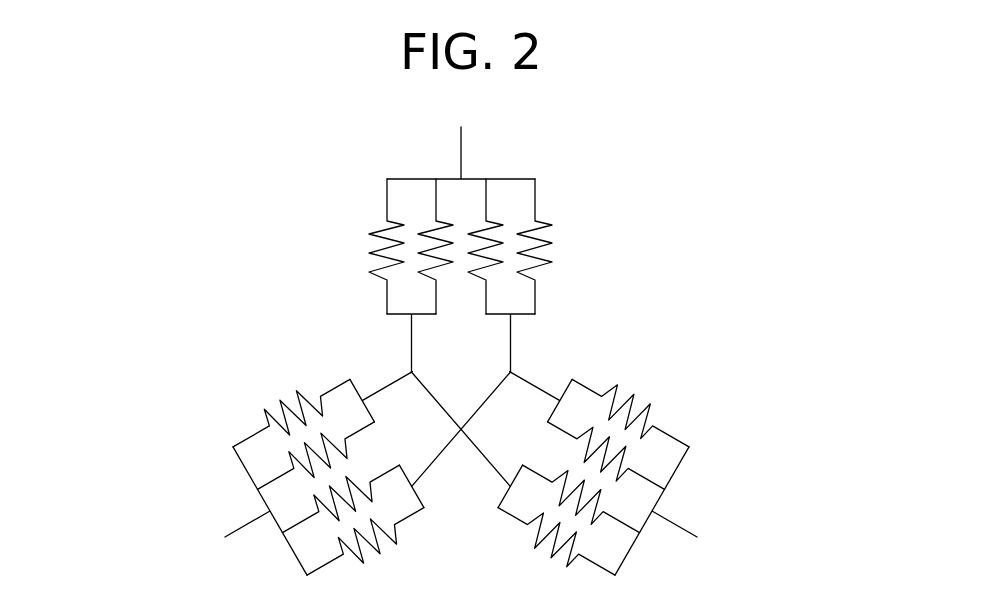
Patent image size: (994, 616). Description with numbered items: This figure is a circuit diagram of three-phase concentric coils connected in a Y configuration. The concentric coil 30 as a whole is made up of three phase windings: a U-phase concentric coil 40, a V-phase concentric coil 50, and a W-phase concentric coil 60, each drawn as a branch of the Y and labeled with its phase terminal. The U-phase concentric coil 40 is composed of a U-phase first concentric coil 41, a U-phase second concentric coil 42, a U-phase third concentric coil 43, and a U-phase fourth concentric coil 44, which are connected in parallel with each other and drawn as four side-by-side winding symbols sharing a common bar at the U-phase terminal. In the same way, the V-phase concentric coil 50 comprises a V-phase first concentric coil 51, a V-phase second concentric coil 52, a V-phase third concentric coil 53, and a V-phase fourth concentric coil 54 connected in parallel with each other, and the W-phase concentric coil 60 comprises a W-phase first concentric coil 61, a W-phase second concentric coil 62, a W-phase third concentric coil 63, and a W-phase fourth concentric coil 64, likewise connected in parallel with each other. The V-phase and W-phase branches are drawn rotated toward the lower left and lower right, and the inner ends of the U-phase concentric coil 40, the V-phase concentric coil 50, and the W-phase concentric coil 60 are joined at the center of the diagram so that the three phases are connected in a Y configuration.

The concentric coil 30 is at (692, 170).
The U-phase concentric coil 40 is at (463, 160).
The U-phase first concentric coil 41 is at (377, 227).
The U-phase second concentric coil 42 is at (430, 225).
The U-phase third concentric coil 43 is at (480, 225).
The U-phase fourth concentric coil 44 is at (530, 225).
The V-phase concentric coil 50 is at (252, 515).
The V-phase first concentric coil 51 is at (267, 413).
The V-phase second concentric coil 52 is at (292, 468).
The V-phase third concentric coil 53 is at (320, 507).
The V-phase fourth concentric coil 54 is at (342, 548).
The W-phase concentric coil 60 is at (680, 518).
The W-phase first concentric coil 61 is at (535, 532).
The W-phase second concentric coil 62 is at (562, 482).
The W-phase third concentric coil 63 is at (585, 438).
The W-phase fourth concentric coil 64 is at (605, 403).